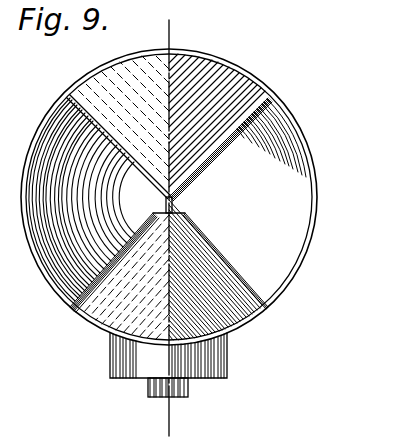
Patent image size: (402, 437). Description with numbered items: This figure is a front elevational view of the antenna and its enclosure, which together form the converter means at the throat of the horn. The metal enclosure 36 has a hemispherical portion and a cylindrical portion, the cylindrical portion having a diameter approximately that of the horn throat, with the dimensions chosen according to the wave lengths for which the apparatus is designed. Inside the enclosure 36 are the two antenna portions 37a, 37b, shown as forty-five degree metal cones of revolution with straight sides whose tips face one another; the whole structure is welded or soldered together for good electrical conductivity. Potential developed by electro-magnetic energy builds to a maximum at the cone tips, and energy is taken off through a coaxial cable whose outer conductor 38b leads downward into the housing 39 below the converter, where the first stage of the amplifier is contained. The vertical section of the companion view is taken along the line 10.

The section line 10— 10 is at (165, 43).
The enclosure 36 is at (320, 199).
The antenna portion 37a is at (243, 137).
The antenna portion 37b is at (241, 271).
The housing 39 is at (228, 362).
The outer conductor 38b is at (150, 391).